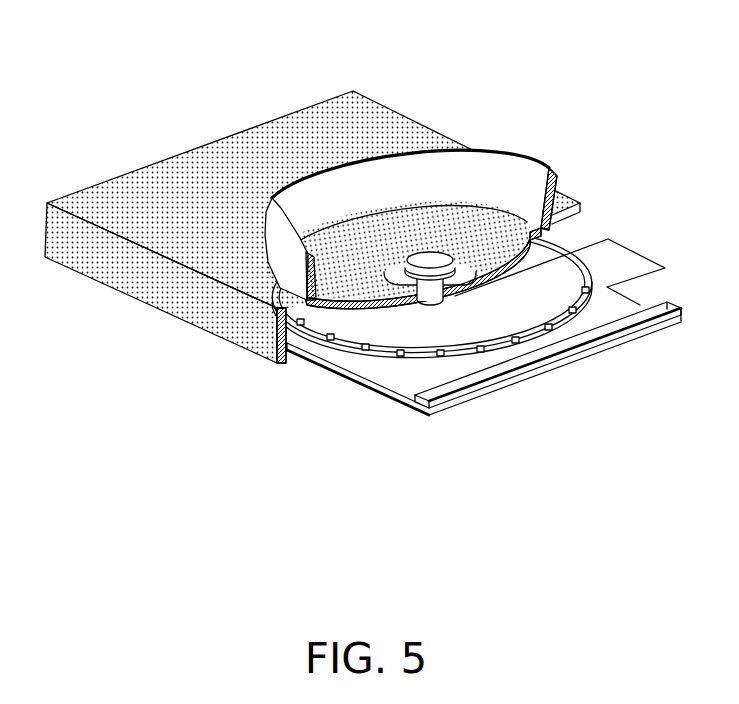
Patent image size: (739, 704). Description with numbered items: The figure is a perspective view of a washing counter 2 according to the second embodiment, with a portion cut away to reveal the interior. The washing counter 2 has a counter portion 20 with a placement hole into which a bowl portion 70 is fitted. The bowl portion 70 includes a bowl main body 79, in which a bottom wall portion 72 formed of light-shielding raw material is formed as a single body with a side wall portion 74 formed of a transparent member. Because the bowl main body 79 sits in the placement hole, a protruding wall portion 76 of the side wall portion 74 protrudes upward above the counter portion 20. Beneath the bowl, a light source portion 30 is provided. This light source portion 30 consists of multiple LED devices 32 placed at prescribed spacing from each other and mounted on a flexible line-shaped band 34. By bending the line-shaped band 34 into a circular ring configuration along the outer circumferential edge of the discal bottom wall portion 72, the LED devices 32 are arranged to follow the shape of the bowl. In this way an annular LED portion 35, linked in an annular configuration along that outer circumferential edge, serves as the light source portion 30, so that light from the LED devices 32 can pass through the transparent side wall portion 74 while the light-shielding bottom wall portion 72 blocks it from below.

The washing counter 2 is at (312, 243).
The counter portion 20 is at (130, 203).
The light source portion 30 is at (475, 411).
The LED devices 32 is at (378, 354).
The line-shaped band 34 is at (407, 355).
The annular LED portion 35 is at (475, 378).
The bowl portion 70 is at (369, 161).
The bottom wall portion 72 is at (388, 227).
The side wall portion 74 is at (308, 193).
The protruding wall portion 76 is at (277, 257).
The bowl main body 79 is at (397, 161).